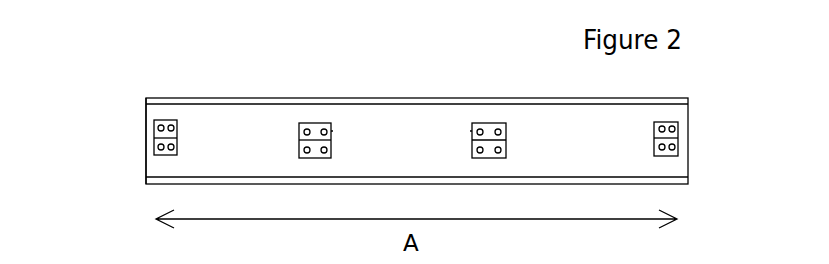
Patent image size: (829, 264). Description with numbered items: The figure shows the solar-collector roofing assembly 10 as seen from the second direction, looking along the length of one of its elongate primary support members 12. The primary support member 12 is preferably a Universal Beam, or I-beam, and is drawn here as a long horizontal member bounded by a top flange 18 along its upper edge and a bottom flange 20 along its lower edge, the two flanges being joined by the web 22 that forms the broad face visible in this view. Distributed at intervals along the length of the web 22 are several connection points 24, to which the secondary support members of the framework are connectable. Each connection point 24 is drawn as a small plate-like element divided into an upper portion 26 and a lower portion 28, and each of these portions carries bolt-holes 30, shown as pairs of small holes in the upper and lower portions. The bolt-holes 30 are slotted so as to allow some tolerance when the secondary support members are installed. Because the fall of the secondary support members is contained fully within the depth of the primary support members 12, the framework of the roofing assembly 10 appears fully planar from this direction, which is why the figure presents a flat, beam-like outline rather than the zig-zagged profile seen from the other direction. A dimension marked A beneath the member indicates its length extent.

The solar-collector roofing assembly 10 is at (136, 108).
The primary support member 12 is at (145, 143).
The top flange 18 is at (688, 103).
The bottom flange 20 is at (688, 178).
The web 22 is at (680, 142).
The connection point 24 is at (173, 155).
The upper portion 26 is at (296, 131).
The lower portion 28 is at (296, 150).
The bolt-hole 30 is at (470, 131).